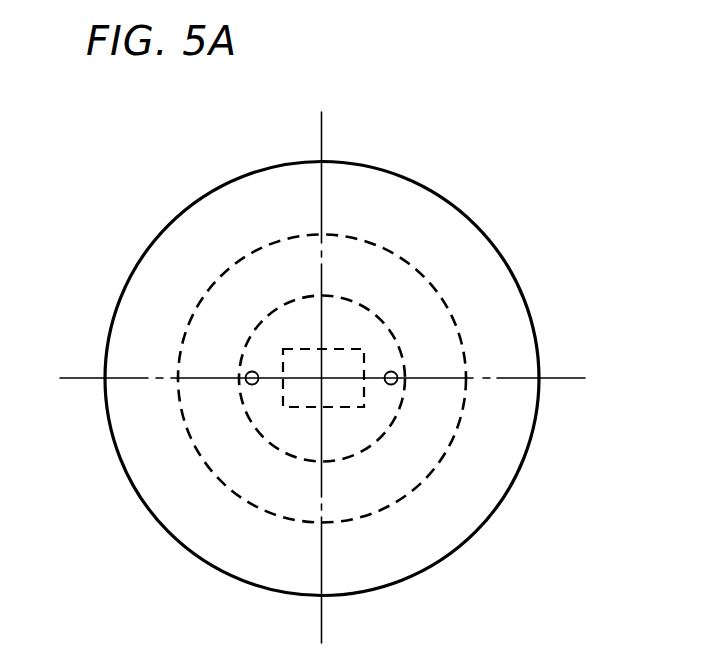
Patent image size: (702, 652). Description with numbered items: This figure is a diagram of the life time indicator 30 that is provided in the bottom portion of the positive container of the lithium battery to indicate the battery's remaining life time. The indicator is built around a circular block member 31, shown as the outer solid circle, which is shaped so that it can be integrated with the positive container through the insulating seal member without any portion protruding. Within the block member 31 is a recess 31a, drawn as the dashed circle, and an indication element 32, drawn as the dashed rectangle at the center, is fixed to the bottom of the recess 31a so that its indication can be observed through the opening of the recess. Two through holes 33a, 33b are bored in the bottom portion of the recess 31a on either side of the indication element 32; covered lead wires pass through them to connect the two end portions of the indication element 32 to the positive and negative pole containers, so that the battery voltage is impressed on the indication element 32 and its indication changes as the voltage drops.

The life time indicator 30 is at (607, 196).
The block member 31 is at (525, 357).
The recess 31a is at (378, 245).
The indication element 32 is at (355, 408).
The through hole 33a is at (396, 373).
The through hole 33b is at (247, 372).